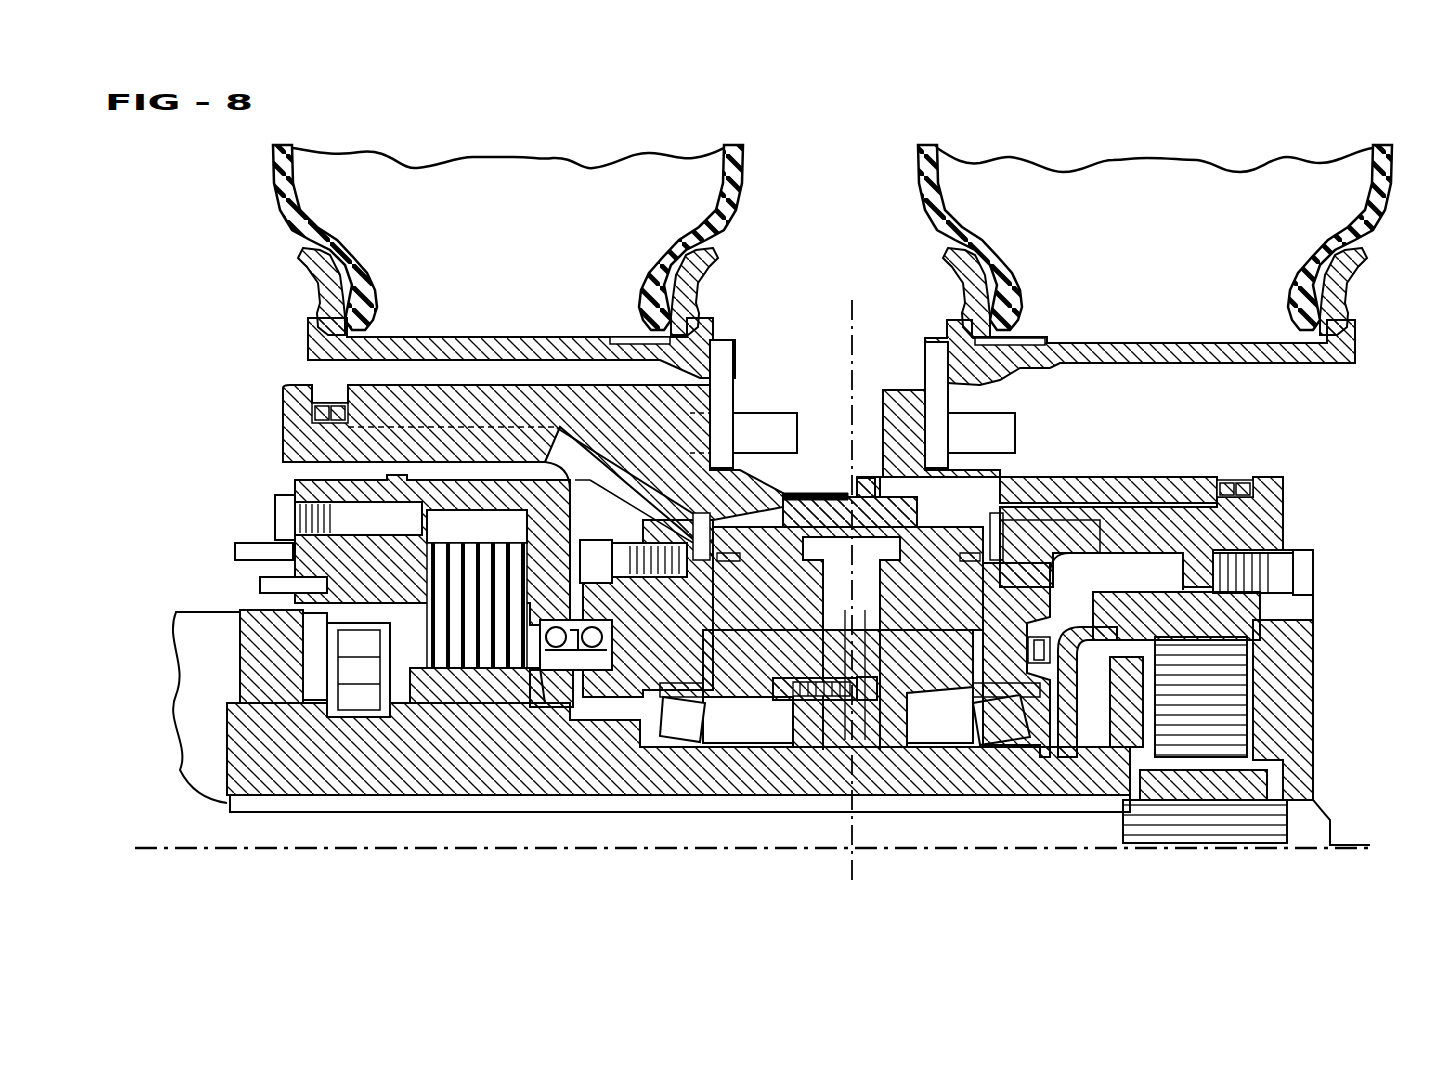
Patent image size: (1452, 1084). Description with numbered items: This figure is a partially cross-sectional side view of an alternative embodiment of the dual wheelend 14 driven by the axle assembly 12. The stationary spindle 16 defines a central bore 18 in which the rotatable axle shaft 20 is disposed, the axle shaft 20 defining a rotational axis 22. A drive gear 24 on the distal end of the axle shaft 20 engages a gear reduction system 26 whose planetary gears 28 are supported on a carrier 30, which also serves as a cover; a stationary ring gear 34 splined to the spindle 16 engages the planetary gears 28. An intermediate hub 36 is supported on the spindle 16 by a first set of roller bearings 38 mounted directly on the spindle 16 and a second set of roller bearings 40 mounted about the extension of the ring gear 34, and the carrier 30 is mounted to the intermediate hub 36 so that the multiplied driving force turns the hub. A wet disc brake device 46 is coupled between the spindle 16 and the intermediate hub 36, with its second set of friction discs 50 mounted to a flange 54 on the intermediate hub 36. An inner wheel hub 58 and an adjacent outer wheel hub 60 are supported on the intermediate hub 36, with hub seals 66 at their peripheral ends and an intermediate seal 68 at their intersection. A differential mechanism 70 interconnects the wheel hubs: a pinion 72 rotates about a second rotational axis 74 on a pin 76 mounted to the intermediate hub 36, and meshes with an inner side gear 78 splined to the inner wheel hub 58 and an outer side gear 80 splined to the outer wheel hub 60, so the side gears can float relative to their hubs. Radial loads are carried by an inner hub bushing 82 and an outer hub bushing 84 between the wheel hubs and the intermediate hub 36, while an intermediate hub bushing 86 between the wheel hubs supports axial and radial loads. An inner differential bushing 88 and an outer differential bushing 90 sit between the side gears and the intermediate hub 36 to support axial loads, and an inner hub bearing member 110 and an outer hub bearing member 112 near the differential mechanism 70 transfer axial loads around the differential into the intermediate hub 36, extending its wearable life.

The axle assembly 12 is at (302, 853).
The dual wheelend 14 is at (1358, 513).
The stationary spindle 16 is at (352, 780).
The central bore 18 is at (230, 805).
The axle shaft 20 is at (537, 825).
The rotational axis 22 is at (930, 846).
The drive gear 24 is at (1237, 790).
The gear reduction system 26 is at (1258, 722).
The planetary gears 28 is at (1215, 752).
The carrier 30 is at (1280, 650).
The stationary ring gear 34 is at (1210, 615).
The intermediate hub 36 is at (290, 442).
The first set of roller bearings 38 is at (660, 720).
The second set of roller bearings 40 is at (1020, 748).
The wet disc brake device 46 is at (380, 597).
The second set of friction discs 50 is at (482, 710).
The flange 54 is at (535, 700).
The inner wheel hub 58 is at (458, 395).
The outer wheel hub 60 is at (1040, 490).
The hub seals 66 is at (318, 403).
The intermediate seal 68 is at (862, 478).
The differential mechanism 70 is at (895, 660).
The pinion 72 is at (793, 620).
The second rotational axis 74 is at (845, 340).
The pin 76 is at (870, 548).
The inner side gear 78 is at (748, 640).
The outer side gear 80 is at (962, 622).
The inner hub bushing 82 is at (410, 395).
The outer hub bushing 84 is at (1187, 500).
The intermediate hub bushing 86 is at (805, 495).
The inner differential bushing 88 is at (735, 575).
The outer differential bushing 90 is at (1048, 568).
The inner hub bearing member 110 is at (745, 480).
The outer hub bearing member 112 is at (1087, 515).